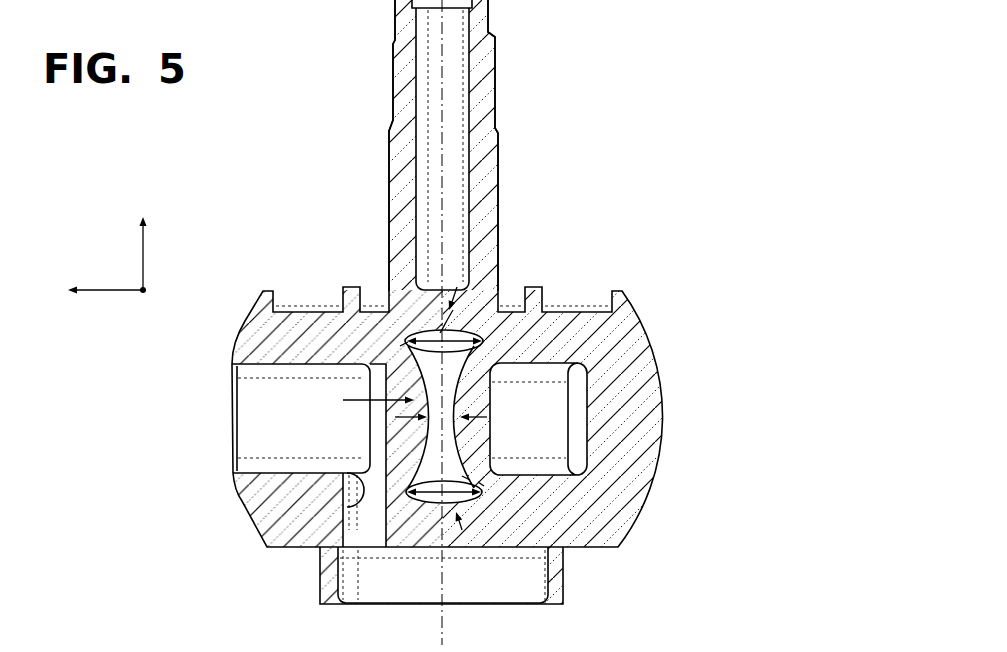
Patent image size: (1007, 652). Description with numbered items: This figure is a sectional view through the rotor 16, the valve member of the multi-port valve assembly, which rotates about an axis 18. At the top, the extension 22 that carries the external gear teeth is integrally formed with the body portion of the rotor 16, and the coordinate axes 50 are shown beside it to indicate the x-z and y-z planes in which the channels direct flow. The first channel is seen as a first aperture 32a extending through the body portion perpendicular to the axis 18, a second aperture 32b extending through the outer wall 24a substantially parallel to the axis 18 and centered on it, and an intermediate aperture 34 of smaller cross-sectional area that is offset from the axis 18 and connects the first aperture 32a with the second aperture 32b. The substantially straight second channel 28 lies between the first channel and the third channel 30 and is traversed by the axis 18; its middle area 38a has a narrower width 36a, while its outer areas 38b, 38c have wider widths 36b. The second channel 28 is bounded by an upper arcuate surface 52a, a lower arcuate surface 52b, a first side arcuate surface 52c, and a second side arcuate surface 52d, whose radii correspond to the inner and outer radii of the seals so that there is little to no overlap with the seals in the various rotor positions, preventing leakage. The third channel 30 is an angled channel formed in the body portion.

The rotor 16 is at (610, 497).
The axis 18 is at (443, 60).
The extension 22 is at (487, 163).
The outer wall 24a is at (563, 572).
The second channel 28 is at (449, 373).
The third channel 30 is at (533, 463).
The first aperture 32a is at (297, 472).
The second aperture 32b is at (340, 573).
The intermediate aperture 34 is at (358, 470).
The width 36a is at (486, 417).
The wider widths 36b is at (453, 310).
The middle area 38a is at (405, 400).
The outer area 38b is at (457, 287).
The outer area 38c is at (462, 530).
The axes 50 is at (64, 211).
The upper arcuate surface 52a is at (427, 334).
The lower arcuate surface 52b is at (440, 505).
The first side arcuate surface 52c is at (405, 345).
The second side arcuate surface 52d is at (478, 482).